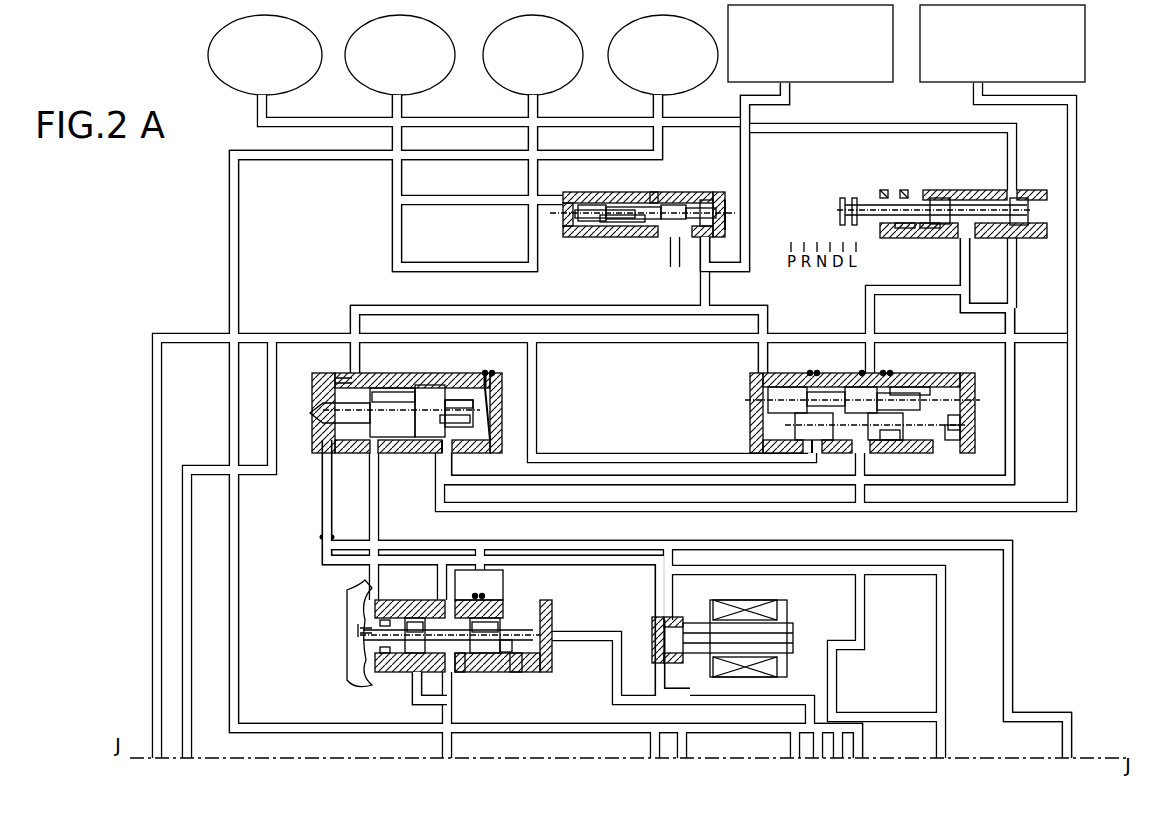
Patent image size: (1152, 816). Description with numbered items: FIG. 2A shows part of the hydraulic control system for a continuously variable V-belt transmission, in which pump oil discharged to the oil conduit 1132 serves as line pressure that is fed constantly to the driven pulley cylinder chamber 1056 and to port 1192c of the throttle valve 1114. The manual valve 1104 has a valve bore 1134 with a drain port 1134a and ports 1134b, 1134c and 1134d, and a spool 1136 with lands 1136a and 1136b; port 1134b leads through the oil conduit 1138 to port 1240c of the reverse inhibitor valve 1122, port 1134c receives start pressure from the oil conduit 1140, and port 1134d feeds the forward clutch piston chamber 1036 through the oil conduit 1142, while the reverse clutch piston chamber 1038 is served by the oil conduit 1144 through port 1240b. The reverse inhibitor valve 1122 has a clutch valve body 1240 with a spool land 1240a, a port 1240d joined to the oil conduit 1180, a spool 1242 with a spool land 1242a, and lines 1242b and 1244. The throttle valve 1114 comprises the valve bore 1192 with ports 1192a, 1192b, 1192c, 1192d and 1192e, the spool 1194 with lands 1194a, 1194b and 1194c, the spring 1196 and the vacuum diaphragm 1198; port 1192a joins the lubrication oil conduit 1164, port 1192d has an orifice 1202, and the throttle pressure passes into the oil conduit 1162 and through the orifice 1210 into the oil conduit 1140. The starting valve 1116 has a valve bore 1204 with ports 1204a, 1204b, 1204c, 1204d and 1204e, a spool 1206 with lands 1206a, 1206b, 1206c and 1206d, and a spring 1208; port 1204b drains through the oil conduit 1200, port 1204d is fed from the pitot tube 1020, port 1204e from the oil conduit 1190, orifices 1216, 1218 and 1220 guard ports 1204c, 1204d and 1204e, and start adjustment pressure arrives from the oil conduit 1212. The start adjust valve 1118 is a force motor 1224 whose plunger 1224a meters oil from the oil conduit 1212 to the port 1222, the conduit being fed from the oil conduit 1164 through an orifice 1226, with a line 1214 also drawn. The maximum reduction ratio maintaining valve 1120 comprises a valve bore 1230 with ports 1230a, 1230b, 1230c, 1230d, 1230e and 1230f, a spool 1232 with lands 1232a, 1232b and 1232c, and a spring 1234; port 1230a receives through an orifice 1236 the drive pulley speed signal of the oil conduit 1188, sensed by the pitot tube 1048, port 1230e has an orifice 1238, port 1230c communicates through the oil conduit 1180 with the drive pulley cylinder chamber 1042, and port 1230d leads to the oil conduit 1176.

The pitot tube 1020 is at (1085, 75).
The piston chamber of the forward clutch 1036 is at (318, 80).
The piston chamber of the reverse clutch 1038 is at (452, 80).
The drive pulley cylinder chamber 1042 is at (580, 80).
The pitot tube (drive pulley speed) 1048 is at (838, 86).
The driven pulley cylinder chamber 1056 is at (712, 80).
The manual valve 1104 is at (985, 180).
The throttle valve 1114 is at (360, 585).
The starting valve 1116 is at (305, 472).
The start adjust valve 1118 is at (795, 605).
The maximum reduction ratio maintaining valve 1120 is at (740, 395).
The reverse inhibitor valve 1122 is at (722, 195).
The oil conduit 1132 is at (310, 165).
The valve bore 1134 is at (1040, 203).
The drain port 1134a is at (896, 240).
The port 1134b is at (922, 240).
The port 1134c is at (972, 242).
The port 1134d is at (1012, 242).
The spool 1136 is at (870, 198).
The land 1136a is at (940, 197).
The land 1136b is at (1018, 196).
The oil conduit 1138 is at (845, 167).
The oil conduit 1140 is at (420, 507).
The oil conduit 1142 is at (922, 126).
The oil conduit 1144 is at (433, 262).
The oil conduit 1162 is at (936, 686).
The oil conduit 1164 is at (580, 692).
The oil conduit 1176 is at (866, 628).
The oil conduit 1180 is at (868, 310).
The oil conduit 1188 is at (155, 408).
The oil conduit 1190 is at (200, 468).
The valve bore 1192 is at (433, 598).
The port 1192a is at (385, 655).
The port 1192b is at (435, 692).
The port 1192c is at (475, 677).
The port 1192d is at (520, 677).
The port 1192e is at (515, 652).
The spool 1194 is at (535, 635).
The land 1194a is at (412, 618).
The land 1194b is at (478, 592).
The land 1194c is at (500, 618).
The spring 1196 is at (345, 682).
The vacuum diaphragm 1198 is at (348, 662).
The oil conduit 1200 is at (538, 425).
The orifice 1202 is at (530, 546).
The valve bore 1204 is at (420, 372).
The port 1204a is at (325, 414).
The port 1204b is at (325, 462).
The port 1204c is at (450, 457).
The port 1204d is at (470, 432).
The port 1204e is at (492, 417).
The spool 1206 is at (470, 412).
The land 1206a is at (355, 370).
The land 1206b is at (390, 390).
The land 1206c is at (445, 388).
The land 1206d is at (460, 400).
The spring 1208 is at (342, 372).
The orifice 1210 is at (320, 540).
The oil conduit 1212 is at (672, 557).
The line 1214 is at (1080, 100).
The orifice 1216 is at (374, 470).
The orifice 1218 is at (449, 470).
The orifice 1220 is at (494, 375).
The port 1222 is at (660, 667).
The force motor 1224 is at (738, 600).
The plunger 1224a is at (690, 622).
The orifice 1226 is at (640, 595).
The valve bore 1230 is at (755, 427).
The port 1230a is at (765, 367).
The port 1230b is at (770, 392).
The port 1230c is at (845, 385).
The port 1230d is at (812, 370).
The port 1230e is at (887, 370).
The port 1230f is at (945, 402).
The spool 1232 is at (955, 422).
The land 1232a is at (820, 457).
The land 1232b is at (892, 442).
The land 1232c is at (950, 442).
The spring 1234 is at (910, 385).
The orifice 1236 is at (760, 355).
The orifice 1238 is at (864, 370).
The clutch valve body 1240 is at (578, 190).
The spool land 1240a is at (620, 202).
The port 1240b is at (690, 185).
The port 1240c is at (750, 175).
The port 1240d is at (712, 198).
The spool 1242 is at (568, 233).
The spool land 1242a is at (612, 237).
The line 1242b is at (700, 262).
The line 1244 is at (600, 272).